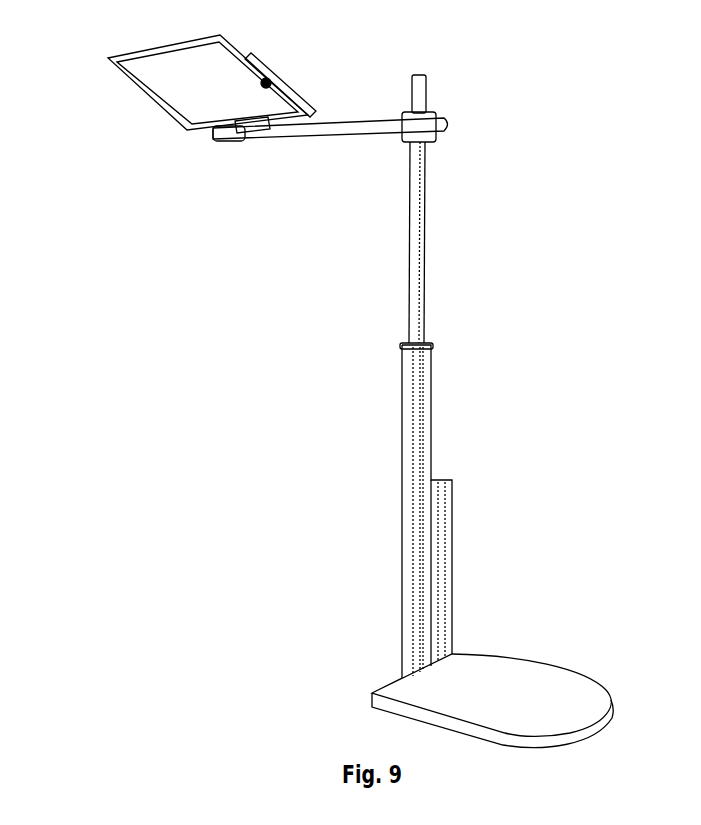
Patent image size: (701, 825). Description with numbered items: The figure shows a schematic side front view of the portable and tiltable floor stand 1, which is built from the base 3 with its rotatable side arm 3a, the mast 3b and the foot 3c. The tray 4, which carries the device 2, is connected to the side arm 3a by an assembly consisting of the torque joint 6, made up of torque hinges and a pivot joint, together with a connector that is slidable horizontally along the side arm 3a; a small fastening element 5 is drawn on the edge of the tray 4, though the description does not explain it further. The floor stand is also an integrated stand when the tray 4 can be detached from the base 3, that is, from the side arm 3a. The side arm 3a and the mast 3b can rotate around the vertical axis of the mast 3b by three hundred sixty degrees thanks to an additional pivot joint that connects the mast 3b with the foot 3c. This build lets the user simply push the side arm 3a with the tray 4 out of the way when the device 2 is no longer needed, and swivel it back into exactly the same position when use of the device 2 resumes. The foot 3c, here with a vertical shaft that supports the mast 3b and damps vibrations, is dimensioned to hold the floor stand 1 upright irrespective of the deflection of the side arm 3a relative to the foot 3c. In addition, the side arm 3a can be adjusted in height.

The portable and tiltable stand 1 is at (374, 387).
The device 2 is at (205, 113).
The base 3 is at (413, 411).
The side arm 3a is at (313, 136).
The mast 3b is at (422, 193).
The foot 3c is at (527, 705).
The tray 4 is at (303, 101).
The fastening knob 5 is at (272, 78).
The torque joint 6 is at (240, 130).